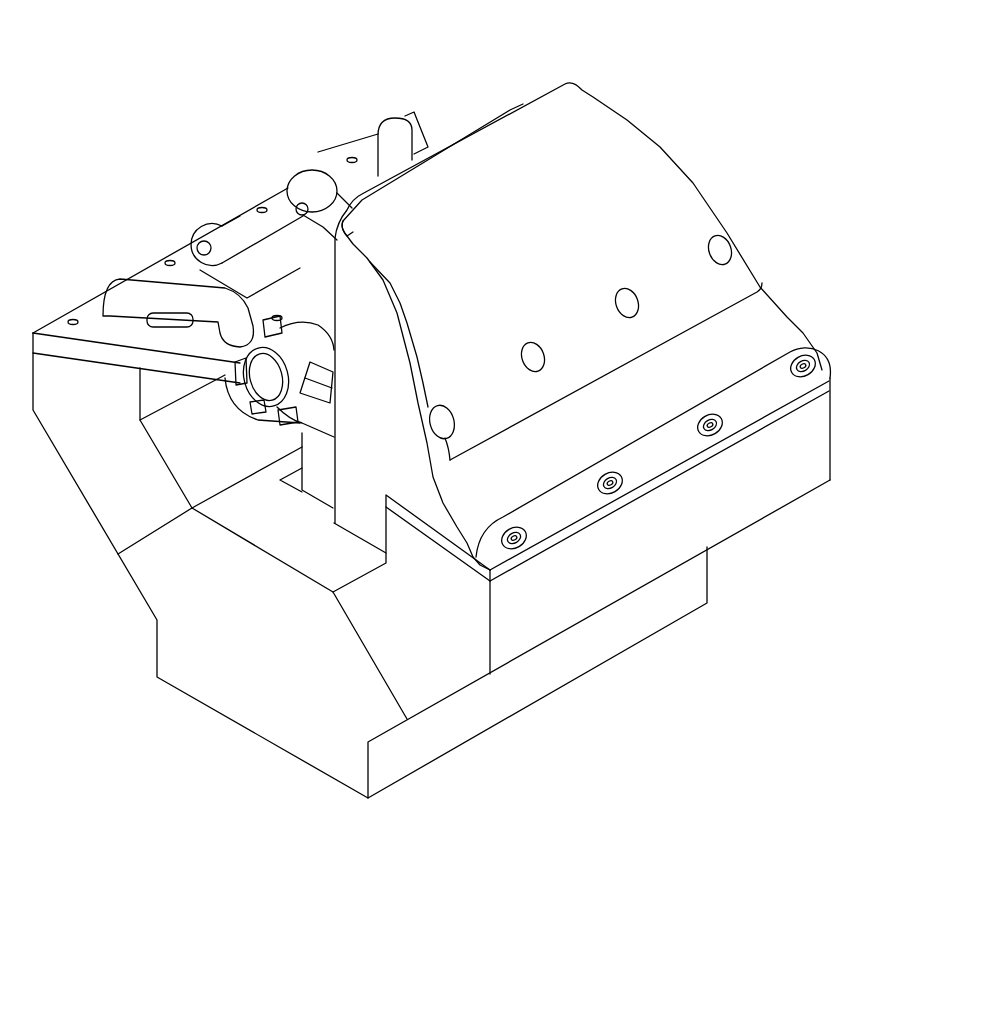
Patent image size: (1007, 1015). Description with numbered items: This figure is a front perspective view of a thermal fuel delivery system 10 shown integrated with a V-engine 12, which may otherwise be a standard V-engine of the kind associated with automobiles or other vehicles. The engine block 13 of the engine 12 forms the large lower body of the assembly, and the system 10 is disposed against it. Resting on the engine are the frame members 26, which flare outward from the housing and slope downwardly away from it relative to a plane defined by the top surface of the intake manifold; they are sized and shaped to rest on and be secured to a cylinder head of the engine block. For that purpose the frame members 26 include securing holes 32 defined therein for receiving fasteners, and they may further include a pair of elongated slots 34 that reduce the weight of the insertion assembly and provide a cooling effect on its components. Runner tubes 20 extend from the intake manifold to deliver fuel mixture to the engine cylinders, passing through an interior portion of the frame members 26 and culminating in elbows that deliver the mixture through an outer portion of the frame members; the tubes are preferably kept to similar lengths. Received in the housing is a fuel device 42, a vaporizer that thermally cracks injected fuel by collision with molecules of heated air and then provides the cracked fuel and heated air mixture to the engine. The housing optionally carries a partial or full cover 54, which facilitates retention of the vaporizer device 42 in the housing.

The thermal fuel delivery system 10 is at (488, 89).
The V-engine 12 is at (817, 501).
The engine block 13 is at (757, 518).
The runner tubes 20 is at (297, 174).
The frame members 26 is at (80, 300).
The securing holes 32 is at (169, 258).
The elongated slots 34 is at (165, 316).
The fuel device 42 is at (300, 220).
The cover 54 is at (678, 160).